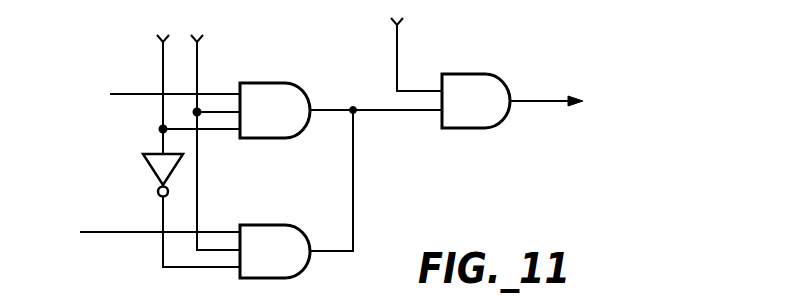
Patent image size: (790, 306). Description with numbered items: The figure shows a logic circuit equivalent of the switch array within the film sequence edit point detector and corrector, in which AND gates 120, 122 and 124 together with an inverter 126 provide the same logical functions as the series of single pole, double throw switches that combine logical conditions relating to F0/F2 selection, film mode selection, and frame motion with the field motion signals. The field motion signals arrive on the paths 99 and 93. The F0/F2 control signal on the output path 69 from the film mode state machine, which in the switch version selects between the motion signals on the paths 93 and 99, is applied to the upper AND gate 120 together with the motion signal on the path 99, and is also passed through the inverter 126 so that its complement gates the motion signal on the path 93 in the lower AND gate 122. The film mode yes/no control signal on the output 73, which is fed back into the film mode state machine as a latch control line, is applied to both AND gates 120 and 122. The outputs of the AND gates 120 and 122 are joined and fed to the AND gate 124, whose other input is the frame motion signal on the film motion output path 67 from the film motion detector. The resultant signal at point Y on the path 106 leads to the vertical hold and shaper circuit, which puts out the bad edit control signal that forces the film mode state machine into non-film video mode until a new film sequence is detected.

The output path 69 is at (160, 62).
The output 73 is at (198, 62).
The path 99 is at (125, 95).
The path 93 is at (128, 233).
The inverter 126 is at (147, 166).
The AND gate 120 is at (258, 92).
The AND gate 122 is at (258, 230).
The film motion output path 67 is at (400, 58).
The AND gate 124 is at (467, 80).
The path 106 is at (583, 100).